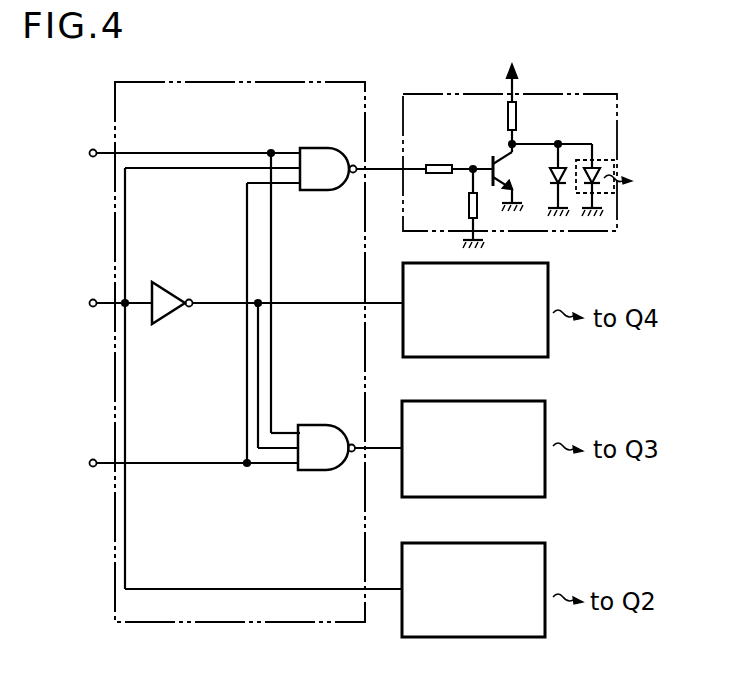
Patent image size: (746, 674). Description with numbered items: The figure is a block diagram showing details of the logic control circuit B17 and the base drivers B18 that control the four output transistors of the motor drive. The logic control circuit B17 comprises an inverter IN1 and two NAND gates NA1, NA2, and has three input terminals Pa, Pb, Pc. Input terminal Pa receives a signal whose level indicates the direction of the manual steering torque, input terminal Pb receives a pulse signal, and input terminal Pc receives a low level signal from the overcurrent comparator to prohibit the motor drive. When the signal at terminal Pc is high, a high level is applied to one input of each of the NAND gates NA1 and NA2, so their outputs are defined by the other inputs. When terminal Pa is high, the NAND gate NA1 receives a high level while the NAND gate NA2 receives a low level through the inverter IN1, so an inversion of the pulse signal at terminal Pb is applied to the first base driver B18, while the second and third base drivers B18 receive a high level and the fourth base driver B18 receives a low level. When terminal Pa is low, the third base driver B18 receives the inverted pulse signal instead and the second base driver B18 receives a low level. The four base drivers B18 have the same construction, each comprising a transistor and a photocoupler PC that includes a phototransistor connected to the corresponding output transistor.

The logic control circuit B17 is at (235, 82).
The base driver B18 is at (552, 356).
The NAND gate NA1 is at (321, 148).
The NAND gate NA2 is at (319, 425).
The inverter IN1 is at (179, 283).
The photocoupler PC is at (599, 159).
The input terminal Pb is at (76, 154).
The input terminal Pa is at (76, 307).
The input terminal Pc is at (77, 464).